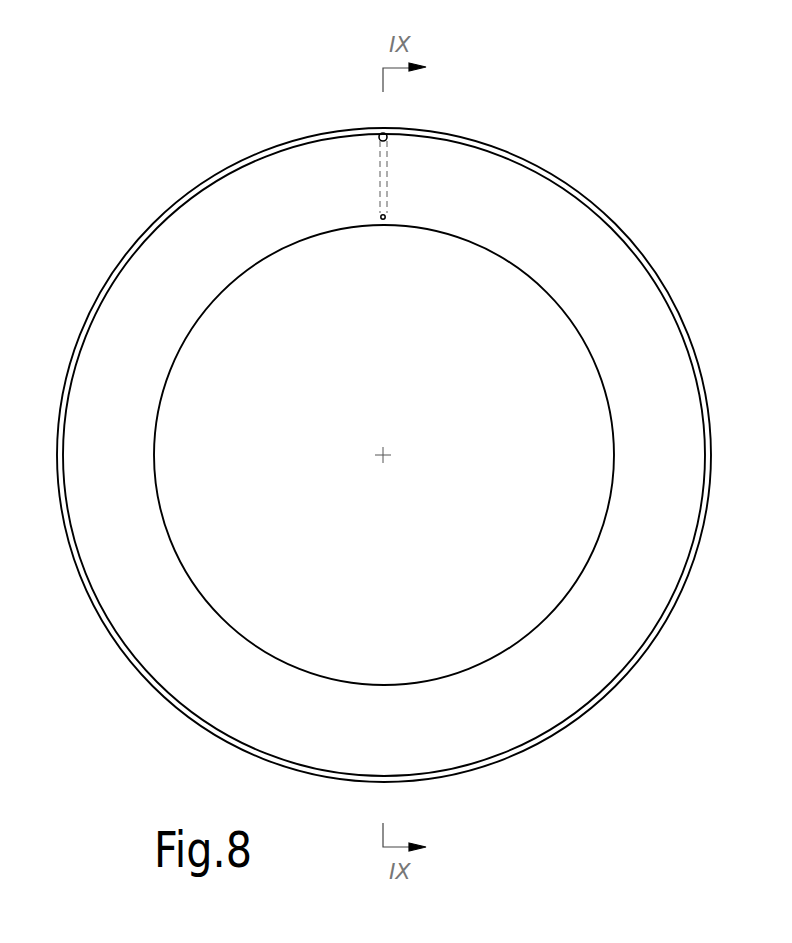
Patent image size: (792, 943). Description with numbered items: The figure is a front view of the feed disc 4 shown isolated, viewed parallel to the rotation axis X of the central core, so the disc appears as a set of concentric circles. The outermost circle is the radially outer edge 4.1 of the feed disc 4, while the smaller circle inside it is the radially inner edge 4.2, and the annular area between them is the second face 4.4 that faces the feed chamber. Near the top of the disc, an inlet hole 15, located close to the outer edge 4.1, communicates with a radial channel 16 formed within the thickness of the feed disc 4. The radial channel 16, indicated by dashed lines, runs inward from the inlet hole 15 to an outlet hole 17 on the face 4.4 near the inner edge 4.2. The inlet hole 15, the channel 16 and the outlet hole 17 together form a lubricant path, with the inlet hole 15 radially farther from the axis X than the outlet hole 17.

The feed disc 4 is at (713, 392).
The radially outer edge 4.1 is at (630, 238).
The radially inner edge 4.2 is at (607, 413).
The second face 4.4 is at (668, 478).
The inlet hole 15 is at (380, 139).
The radial channel 16 is at (388, 178).
The outlet hole 17 is at (380, 216).
The rotation axis X is at (386, 458).